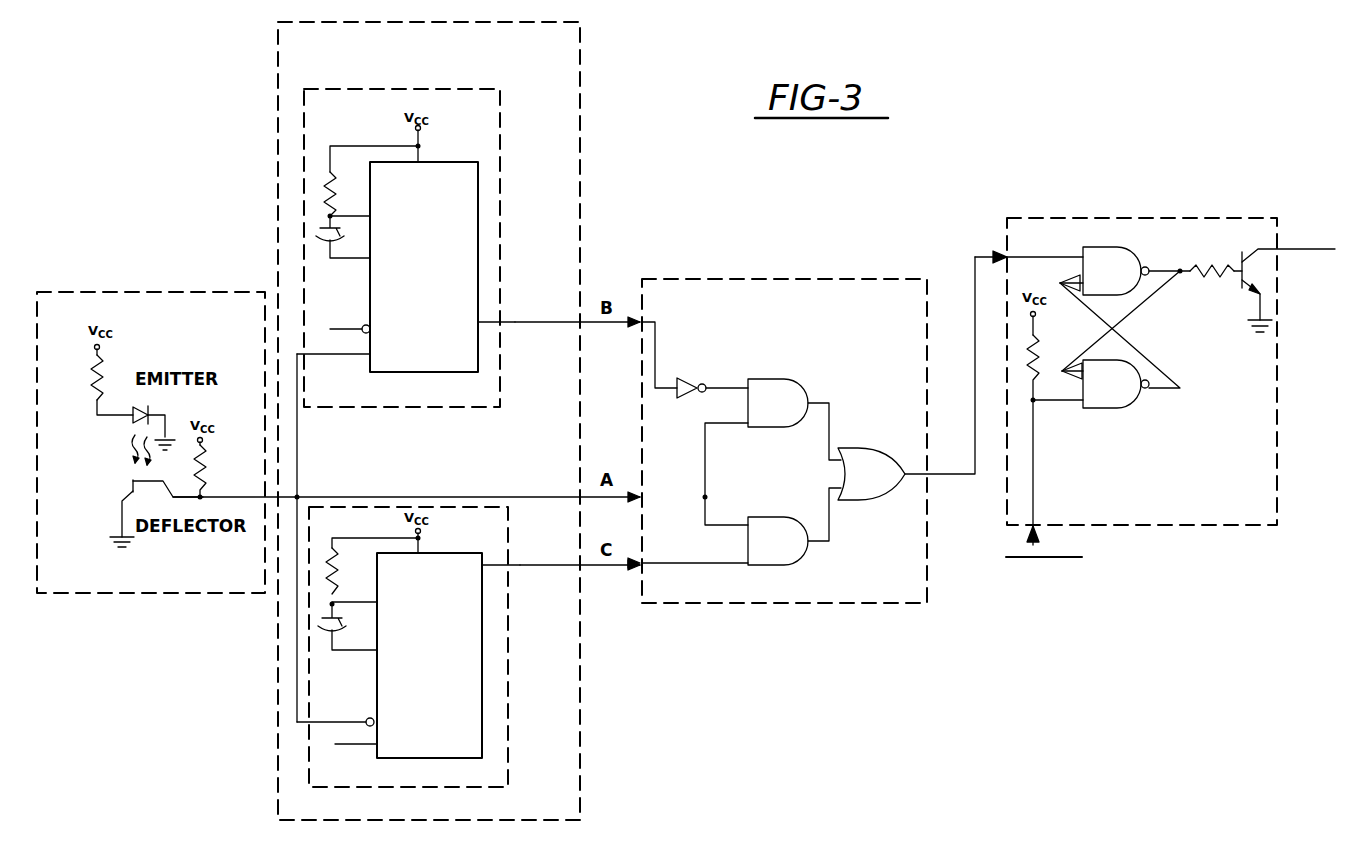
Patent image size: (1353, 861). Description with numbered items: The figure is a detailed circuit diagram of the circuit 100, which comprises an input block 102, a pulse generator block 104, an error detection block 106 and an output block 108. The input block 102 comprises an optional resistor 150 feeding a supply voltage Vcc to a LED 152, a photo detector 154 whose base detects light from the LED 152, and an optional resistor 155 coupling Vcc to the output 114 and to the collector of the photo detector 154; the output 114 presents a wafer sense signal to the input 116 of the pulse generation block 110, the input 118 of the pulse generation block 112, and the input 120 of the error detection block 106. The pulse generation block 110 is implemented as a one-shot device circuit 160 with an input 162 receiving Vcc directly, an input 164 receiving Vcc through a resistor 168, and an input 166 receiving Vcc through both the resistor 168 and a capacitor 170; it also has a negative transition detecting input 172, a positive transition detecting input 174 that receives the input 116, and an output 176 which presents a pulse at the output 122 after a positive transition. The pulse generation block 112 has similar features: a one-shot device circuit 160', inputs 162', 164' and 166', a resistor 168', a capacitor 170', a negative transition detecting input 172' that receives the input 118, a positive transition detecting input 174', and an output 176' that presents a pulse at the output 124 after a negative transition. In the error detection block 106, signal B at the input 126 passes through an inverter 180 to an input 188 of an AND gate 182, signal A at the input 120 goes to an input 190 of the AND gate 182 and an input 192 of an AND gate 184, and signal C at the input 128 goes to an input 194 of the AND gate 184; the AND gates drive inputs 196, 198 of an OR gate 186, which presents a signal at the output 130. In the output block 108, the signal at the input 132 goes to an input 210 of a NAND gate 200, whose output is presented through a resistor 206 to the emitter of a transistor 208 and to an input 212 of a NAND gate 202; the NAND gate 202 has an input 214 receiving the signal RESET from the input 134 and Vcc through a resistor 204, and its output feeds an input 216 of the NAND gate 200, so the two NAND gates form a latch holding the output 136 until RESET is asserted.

The circuit 100 is at (131, 95).
The input block 102 is at (66, 595).
The pulse generator block 104 is at (288, 28).
The error detection block 106 is at (761, 604).
The output block 108 is at (1220, 526).
The pulse generation block 110 is at (424, 407).
The pulse generation block 112 is at (504, 696).
The output 114 is at (295, 556).
The input 116 is at (296, 354).
The input 118 is at (310, 735).
The input 120 is at (643, 494).
The output 122 is at (518, 318).
The output 124 is at (502, 568).
The input 126 is at (640, 314).
The input 128 is at (642, 566).
The output 130 is at (970, 474).
The input 132 is at (1000, 256).
The input 134 is at (1040, 530).
The output 136 is at (1280, 254).
The resistor 150 is at (98, 385).
The LED 152 is at (136, 408).
The photo detector 154 is at (130, 484).
The resistor 155 is at (210, 488).
The one-shot device circuit 160 is at (465, 231).
The one-shot device circuit 160' is at (438, 685).
The input 162 is at (459, 109).
The input 162' is at (466, 508).
The input 164 is at (358, 158).
The input 164' is at (365, 535).
The input 166 is at (294, 237).
The input 166' is at (298, 657).
The resistor 168 is at (366, 134).
The resistor 168' is at (365, 522).
The capacitor 170 is at (405, 245).
The capacitor 170' is at (402, 616).
The negative transition detecting input 172 is at (289, 295).
The negative transition detecting input 172' is at (298, 731).
The positive transition detecting input 174 is at (337, 408).
The positive transition detecting input 174' is at (327, 806).
The output 176 is at (516, 262).
The output 176' is at (525, 617).
The inverter 180 is at (690, 382).
The AND gate 182 is at (788, 378).
The AND gate 184 is at (778, 516).
The OR gate 186 is at (876, 450).
The input 188 is at (748, 378).
The input 190 is at (752, 423).
The input 192 is at (748, 528).
The input 194 is at (744, 564).
The input 196 is at (840, 460).
The input 198 is at (838, 490).
The NAND gate 200 is at (1116, 246).
The NAND gate 202 is at (1140, 408).
The resistor 204 is at (1038, 400).
The resistor 206 is at (1216, 282).
The transistor 208 is at (1252, 248).
The input 210 is at (1084, 278).
The input 212 is at (1074, 370).
The input 214 is at (1086, 404).
The input 216 is at (1082, 278).